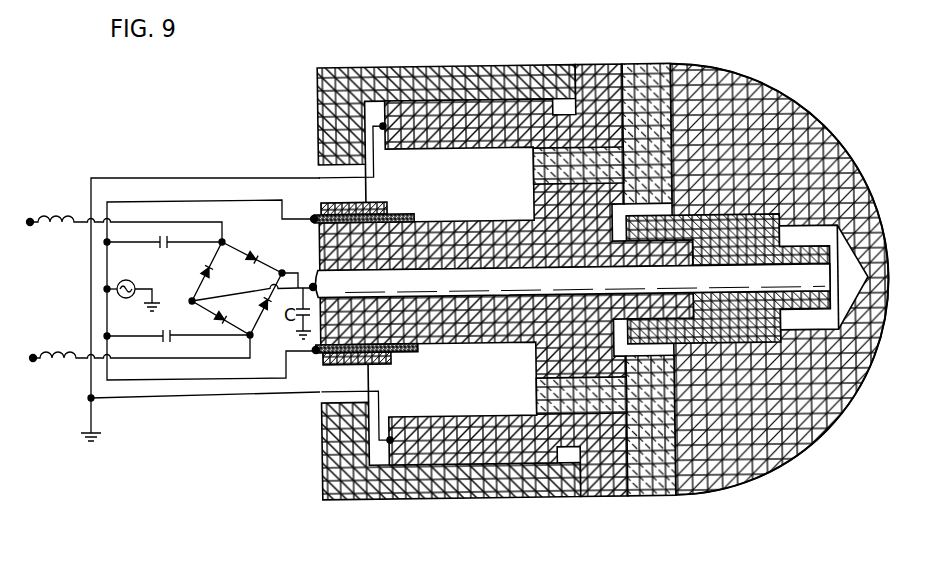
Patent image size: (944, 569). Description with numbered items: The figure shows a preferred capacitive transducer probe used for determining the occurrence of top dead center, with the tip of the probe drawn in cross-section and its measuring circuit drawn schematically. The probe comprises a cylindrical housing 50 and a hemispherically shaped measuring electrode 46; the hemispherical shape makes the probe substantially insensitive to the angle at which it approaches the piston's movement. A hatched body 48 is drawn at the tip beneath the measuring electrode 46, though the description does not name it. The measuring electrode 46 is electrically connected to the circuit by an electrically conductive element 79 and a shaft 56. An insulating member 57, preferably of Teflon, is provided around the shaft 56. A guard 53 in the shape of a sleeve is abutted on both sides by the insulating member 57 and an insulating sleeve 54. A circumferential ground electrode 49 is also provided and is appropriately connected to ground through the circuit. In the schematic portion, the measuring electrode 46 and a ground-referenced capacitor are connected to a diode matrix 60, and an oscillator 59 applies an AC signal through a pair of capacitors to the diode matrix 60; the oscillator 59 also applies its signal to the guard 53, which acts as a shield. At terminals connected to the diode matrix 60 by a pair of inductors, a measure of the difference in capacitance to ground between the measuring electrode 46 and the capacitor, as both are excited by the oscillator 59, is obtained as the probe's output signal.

The measuring electrode 46 is at (816, 443).
The end body insert 48 is at (645, 494).
The circumferential ground electrode 49 is at (610, 482).
The housing 50 is at (436, 494).
The guard 53 is at (416, 354).
The insulating sleeve 54 is at (391, 363).
The shaft 56 is at (508, 292).
The insulating member 57 is at (499, 349).
The oscillator 59 is at (133, 282).
The diode matrix 60 is at (245, 245).
The electrically conductive element 79 is at (762, 325).